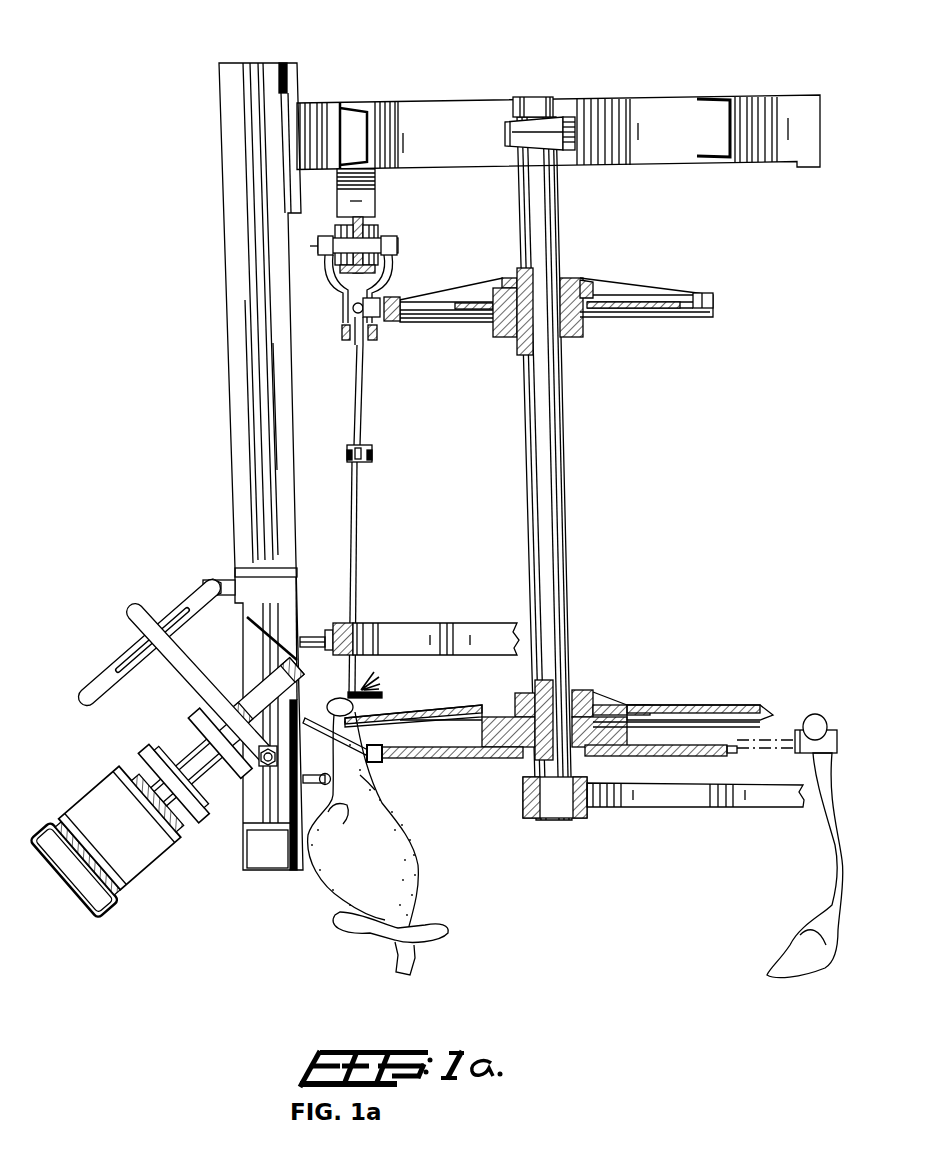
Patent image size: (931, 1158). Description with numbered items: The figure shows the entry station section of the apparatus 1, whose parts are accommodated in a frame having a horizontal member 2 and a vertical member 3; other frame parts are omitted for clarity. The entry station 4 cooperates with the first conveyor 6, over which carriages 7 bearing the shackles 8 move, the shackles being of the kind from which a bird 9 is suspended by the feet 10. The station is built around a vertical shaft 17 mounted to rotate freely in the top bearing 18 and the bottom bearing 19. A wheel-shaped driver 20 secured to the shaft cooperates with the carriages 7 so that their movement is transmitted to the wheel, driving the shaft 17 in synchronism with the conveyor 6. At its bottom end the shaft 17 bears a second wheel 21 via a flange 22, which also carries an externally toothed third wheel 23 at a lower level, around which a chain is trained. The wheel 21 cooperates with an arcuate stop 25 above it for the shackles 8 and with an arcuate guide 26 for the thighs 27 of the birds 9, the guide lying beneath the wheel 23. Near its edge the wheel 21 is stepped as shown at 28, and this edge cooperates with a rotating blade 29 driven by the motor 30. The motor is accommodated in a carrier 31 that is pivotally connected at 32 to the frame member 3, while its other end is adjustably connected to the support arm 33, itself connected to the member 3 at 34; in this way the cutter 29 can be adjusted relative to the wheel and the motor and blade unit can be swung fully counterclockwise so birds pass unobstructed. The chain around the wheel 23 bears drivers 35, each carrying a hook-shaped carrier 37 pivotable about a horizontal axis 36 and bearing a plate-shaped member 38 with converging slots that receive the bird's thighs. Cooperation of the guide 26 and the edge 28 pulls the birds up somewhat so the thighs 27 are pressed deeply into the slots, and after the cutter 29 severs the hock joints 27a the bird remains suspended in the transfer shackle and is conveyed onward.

The apparatus 1 is at (620, 64).
The horizontal frame member 2 is at (458, 115).
The vertical frame member 3 is at (240, 287).
The entry station 4 is at (530, 66).
The first conveyor 6 is at (368, 205).
The carriages 7 is at (346, 305).
The shackles 8 is at (357, 562).
The bird 9 is at (415, 868).
The feet 10 is at (372, 682).
The vertical shaft 17 is at (553, 432).
The top bearing 18 is at (552, 128).
The bottom bearing 19 is at (583, 822).
The wheel-shaped driver 20 is at (585, 303).
The second wheel 21 is at (598, 693).
The flange 22 is at (630, 707).
The third wheel 23 is at (505, 760).
The arcuate stop 25 is at (337, 623).
The arcuate guide 26 is at (332, 806).
The thighs 27 is at (368, 785).
The hock joints 27a is at (322, 716).
The stepped edge 28 is at (765, 713).
The rotating blade 29 is at (272, 640).
The motor 30 is at (153, 867).
The carrier 31 is at (199, 684).
The pivot connection 32 is at (263, 763).
The support arm 33 is at (174, 603).
The support arm connection 34 is at (213, 580).
The drivers 35 is at (383, 762).
The horizontal pivot axis 36 is at (437, 758).
The carrier 37 is at (382, 730).
The plate-shaped member 38 is at (266, 692).